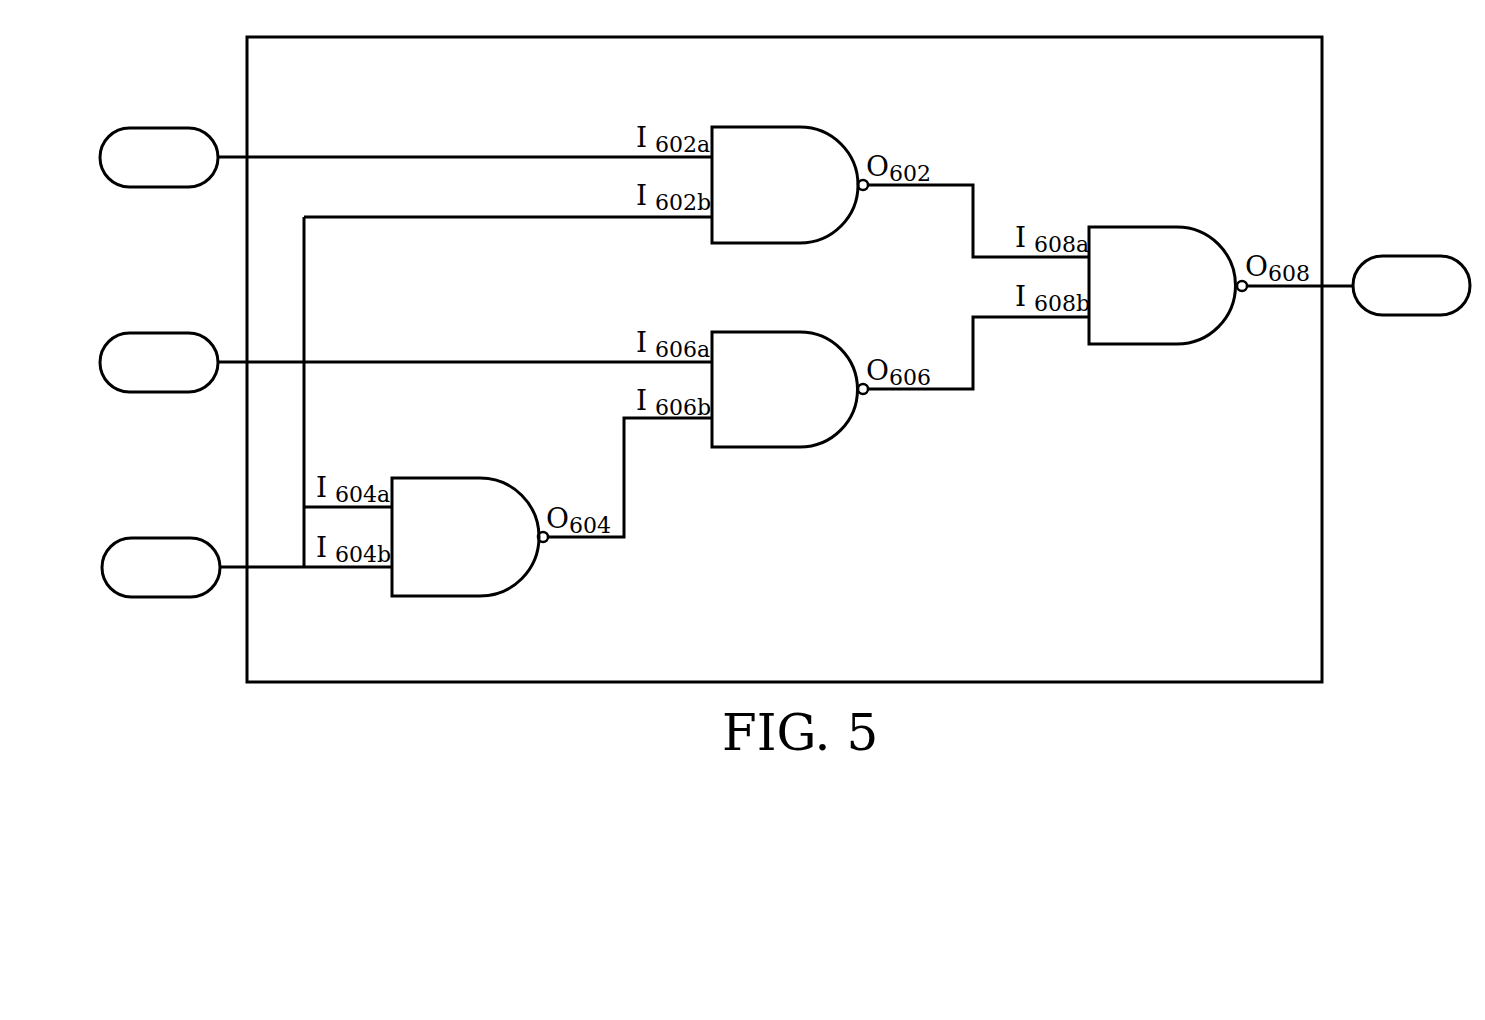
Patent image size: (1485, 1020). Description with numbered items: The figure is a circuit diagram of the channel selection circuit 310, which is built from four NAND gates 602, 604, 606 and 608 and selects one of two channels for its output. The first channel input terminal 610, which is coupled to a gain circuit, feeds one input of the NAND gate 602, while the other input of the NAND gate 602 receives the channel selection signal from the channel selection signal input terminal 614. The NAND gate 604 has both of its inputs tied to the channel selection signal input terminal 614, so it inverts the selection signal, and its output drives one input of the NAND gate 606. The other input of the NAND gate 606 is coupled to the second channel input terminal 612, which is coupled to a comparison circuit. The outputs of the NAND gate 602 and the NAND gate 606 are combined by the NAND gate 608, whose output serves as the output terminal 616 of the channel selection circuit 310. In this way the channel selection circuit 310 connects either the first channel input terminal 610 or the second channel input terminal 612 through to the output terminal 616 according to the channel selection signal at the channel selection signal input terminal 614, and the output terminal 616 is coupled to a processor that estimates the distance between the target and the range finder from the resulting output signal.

The channel selection circuit 310 is at (1208, 37).
The NAND gate 602 is at (752, 127).
The NAND gate 604 is at (437, 597).
The NAND gate 606 is at (755, 447).
The NAND gate 608 is at (1130, 227).
The first channel input terminal 610 is at (159, 157).
The second channel input terminal 612 is at (159, 362).
The channel selection signal input terminal 614 is at (161, 567).
The output terminal 616 is at (1411, 285).